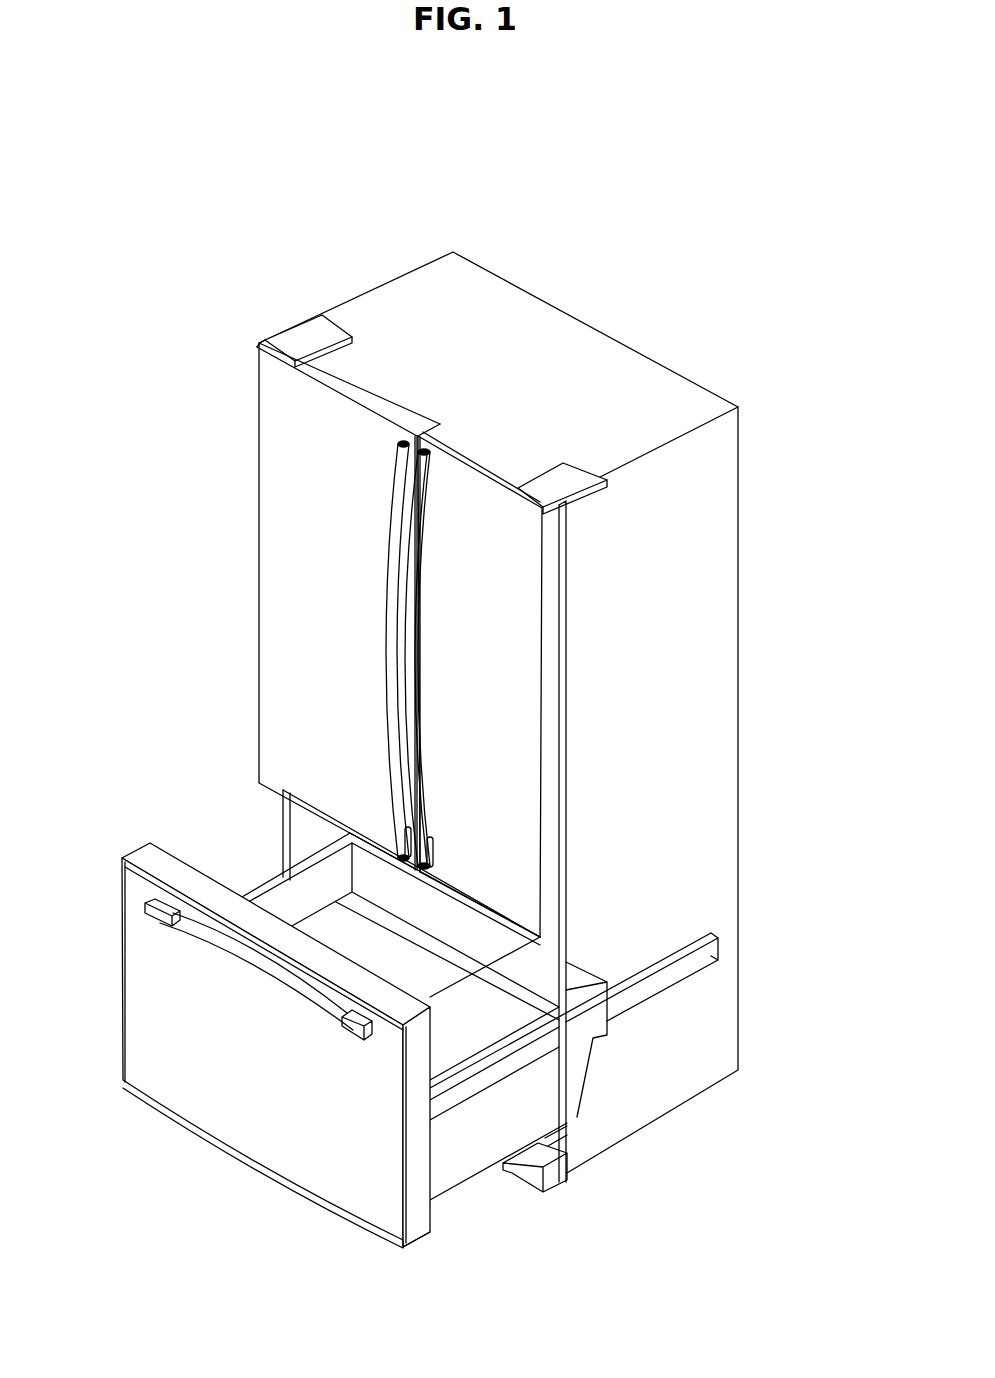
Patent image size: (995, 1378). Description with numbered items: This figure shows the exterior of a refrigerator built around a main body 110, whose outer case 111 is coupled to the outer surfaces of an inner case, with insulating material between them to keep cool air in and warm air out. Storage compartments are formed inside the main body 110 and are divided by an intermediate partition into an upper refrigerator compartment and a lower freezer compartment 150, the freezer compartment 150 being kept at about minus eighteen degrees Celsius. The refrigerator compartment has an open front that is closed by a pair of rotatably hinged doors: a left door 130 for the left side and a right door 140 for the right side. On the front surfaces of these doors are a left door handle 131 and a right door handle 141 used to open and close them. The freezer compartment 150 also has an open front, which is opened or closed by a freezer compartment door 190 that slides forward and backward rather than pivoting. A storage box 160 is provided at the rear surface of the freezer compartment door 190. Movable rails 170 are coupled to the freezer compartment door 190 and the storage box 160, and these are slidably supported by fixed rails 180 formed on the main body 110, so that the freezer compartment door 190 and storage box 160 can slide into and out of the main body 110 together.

The main body 110 is at (504, 300).
The outer case 111 is at (712, 550).
The left door 130 is at (270, 565).
The left door handle 131 is at (386, 652).
The right door 140 is at (490, 618).
The right door handle 141 is at (411, 652).
The freezer compartment 150 is at (356, 937).
The storage box 160 is at (510, 1133).
The movable rails 170 is at (510, 1067).
The fixed rails 180 is at (680, 968).
The freezer compartment door 190 is at (122, 1003).